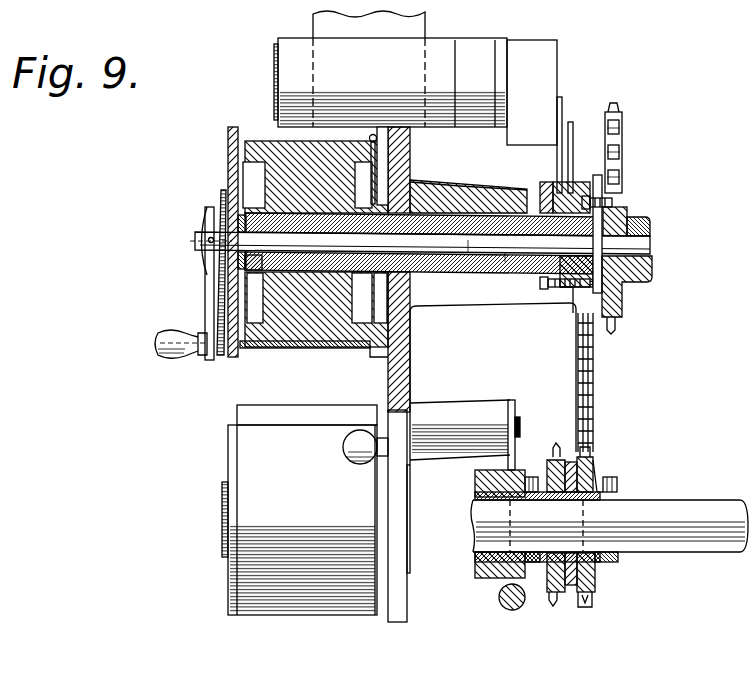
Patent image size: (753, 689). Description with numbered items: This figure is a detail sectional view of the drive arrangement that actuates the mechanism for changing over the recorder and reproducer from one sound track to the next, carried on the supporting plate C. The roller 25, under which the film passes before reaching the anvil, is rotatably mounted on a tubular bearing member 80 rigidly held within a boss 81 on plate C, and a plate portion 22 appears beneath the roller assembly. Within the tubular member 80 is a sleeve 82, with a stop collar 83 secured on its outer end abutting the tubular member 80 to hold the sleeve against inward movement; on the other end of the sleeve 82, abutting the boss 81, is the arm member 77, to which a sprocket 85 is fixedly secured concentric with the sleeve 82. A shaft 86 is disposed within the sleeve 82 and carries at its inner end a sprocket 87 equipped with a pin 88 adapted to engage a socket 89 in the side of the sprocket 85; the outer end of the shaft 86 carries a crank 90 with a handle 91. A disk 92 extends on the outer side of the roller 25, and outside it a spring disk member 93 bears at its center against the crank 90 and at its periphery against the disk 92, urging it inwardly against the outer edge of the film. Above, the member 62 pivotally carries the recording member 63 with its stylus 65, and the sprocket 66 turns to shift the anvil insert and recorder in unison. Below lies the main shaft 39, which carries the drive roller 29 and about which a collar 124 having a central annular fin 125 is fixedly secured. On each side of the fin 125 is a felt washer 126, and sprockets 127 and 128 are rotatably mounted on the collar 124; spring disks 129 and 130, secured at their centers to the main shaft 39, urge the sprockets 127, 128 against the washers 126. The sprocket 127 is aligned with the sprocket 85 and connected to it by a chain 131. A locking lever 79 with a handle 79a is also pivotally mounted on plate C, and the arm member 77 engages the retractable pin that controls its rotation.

The bottom plate band 22 is at (315, 347).
The roller 25 is at (268, 140).
The drive roller 29 is at (299, 510).
The main shaft 39 is at (668, 503).
The member 62 is at (542, 60).
The recording member 63 is at (430, 62).
The stylus 65 is at (368, 130).
The sprocket 66 is at (622, 122).
The arm member 77 is at (545, 303).
The locking lever 79 is at (388, 386).
The handle 79a is at (352, 455).
The tubular bearing member 80 is at (432, 193).
The boss 81 is at (490, 192).
The sleeve 82 is at (505, 256).
The stop collar 83 is at (248, 272).
The sprocket 85 is at (572, 190).
The shaft 86 is at (468, 245).
The sprocket 87 is at (640, 215).
The pin 88 is at (625, 192).
The socket 89 is at (597, 175).
The crank 90 is at (205, 300).
The handle 91 is at (180, 358).
The disk 92 is at (228, 140).
The spring disk member 93 is at (221, 170).
The collar 124 is at (537, 524).
The annular fin 125 is at (572, 460).
The washer 126 is at (549, 598).
The sprocket 127 is at (598, 468).
The sprocket 128 is at (555, 443).
The spring disk 129 is at (607, 477).
The spring disk 130 is at (530, 475).
The chain 131 is at (594, 374).
The supporting plate C is at (410, 370).